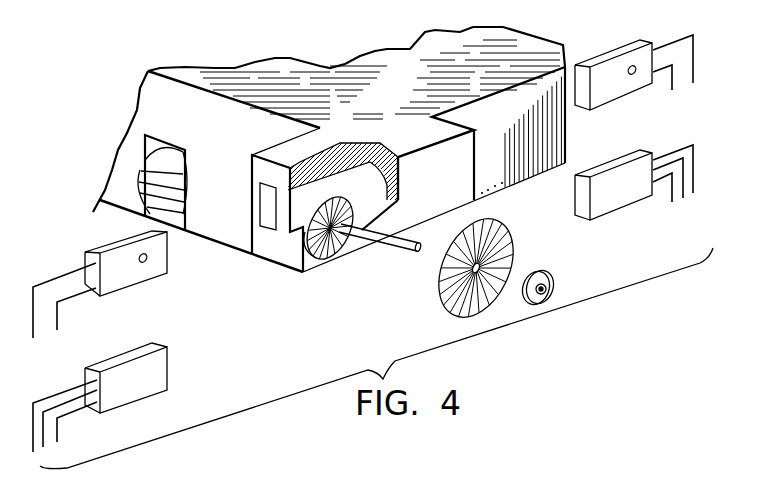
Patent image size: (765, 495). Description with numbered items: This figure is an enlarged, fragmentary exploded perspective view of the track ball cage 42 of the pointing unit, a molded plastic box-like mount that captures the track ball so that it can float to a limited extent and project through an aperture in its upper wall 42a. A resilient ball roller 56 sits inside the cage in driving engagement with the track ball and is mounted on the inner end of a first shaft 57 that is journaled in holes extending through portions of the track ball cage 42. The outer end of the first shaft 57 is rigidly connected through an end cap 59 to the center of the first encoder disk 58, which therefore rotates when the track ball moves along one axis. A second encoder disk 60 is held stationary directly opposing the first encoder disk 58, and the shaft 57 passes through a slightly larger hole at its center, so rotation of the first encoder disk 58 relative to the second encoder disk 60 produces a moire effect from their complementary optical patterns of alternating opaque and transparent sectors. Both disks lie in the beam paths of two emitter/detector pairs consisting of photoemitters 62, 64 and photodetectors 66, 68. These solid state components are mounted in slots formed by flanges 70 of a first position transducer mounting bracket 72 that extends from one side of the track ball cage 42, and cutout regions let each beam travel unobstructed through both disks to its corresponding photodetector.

The track ball cage 42 is at (337, 81).
The upper wall 42a is at (521, 55).
The ball roller 56 is at (152, 171).
The first shaft 57 is at (409, 244).
The first encoder disk 58 is at (508, 249).
The end cap 59 is at (549, 271).
The second encoder disk 60 is at (326, 259).
The photoemitter 62 is at (130, 277).
The photoemitter 64 is at (612, 53).
The photodetector 66 is at (142, 388).
The photodetector 68 is at (608, 160).
The flanges 70 is at (255, 208).
The first position transducer mounting bracket 72 is at (443, 183).